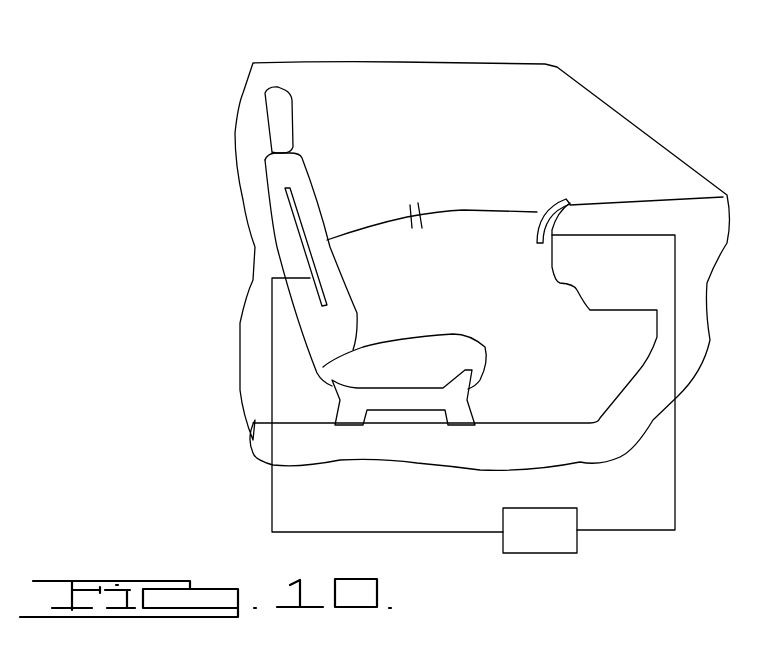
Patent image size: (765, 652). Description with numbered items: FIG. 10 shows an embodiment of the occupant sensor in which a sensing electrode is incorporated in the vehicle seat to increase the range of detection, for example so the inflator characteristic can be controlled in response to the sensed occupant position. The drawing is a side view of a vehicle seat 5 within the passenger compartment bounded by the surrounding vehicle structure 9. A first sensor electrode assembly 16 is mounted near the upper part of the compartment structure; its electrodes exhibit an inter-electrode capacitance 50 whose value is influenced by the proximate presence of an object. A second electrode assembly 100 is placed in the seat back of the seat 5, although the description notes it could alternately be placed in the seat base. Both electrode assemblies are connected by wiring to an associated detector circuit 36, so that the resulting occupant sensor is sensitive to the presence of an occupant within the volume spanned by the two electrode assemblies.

The vehicle seat 5 is at (287, 188).
The vehicle door 9 is at (613, 205).
The sensor electrode assembly 16 is at (569, 201).
The controller 36 is at (557, 547).
The inter-electrode capacitance 50 is at (412, 203).
The seat back sensor 100 is at (327, 302).